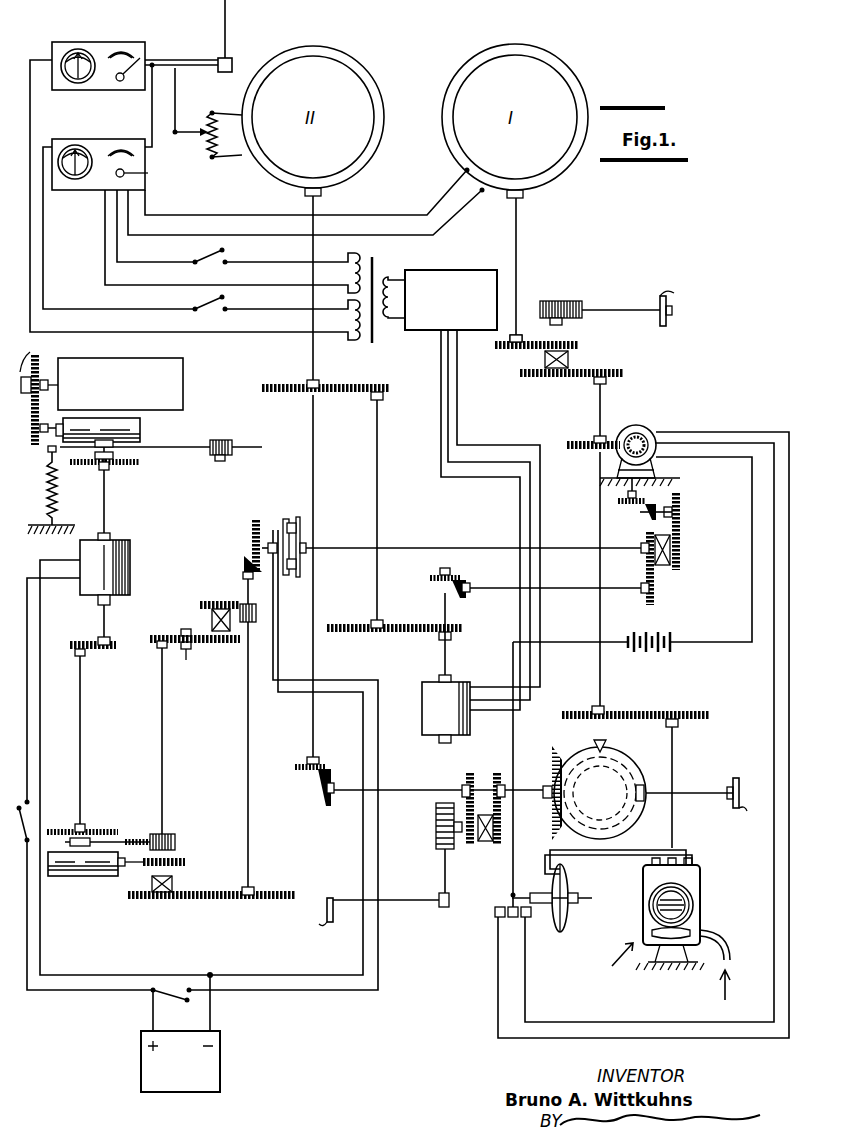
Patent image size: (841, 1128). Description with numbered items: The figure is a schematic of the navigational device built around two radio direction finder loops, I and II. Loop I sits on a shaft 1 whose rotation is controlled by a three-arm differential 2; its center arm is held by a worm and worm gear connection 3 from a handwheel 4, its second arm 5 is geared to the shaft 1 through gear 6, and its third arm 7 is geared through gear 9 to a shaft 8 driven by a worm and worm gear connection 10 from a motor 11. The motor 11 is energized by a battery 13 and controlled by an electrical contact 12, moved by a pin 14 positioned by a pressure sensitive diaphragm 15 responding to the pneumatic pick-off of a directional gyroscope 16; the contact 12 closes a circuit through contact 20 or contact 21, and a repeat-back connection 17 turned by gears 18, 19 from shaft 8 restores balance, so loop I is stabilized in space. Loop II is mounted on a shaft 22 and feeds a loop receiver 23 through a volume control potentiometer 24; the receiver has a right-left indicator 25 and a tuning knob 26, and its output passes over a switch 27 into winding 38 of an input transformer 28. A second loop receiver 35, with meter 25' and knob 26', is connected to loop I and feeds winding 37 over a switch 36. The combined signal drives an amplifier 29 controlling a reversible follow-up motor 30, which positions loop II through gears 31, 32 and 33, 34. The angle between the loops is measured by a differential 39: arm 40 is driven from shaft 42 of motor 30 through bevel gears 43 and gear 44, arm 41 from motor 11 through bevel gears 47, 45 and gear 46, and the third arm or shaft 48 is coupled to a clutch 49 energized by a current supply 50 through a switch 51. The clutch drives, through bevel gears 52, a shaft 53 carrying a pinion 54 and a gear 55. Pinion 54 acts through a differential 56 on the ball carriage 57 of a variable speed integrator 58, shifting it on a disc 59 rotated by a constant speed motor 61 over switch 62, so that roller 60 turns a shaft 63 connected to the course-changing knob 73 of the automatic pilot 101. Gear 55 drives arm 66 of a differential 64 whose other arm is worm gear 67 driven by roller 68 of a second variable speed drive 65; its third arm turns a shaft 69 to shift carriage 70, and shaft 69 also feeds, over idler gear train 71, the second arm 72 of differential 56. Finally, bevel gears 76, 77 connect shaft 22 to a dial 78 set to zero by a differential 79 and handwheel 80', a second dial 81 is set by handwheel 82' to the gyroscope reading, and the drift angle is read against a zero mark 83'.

The shaft 1 is at (518, 238).
The three-arm differential 2 is at (545, 359).
The worm and worm gear connection 3 is at (558, 302).
The handwheel 4 is at (675, 308).
The second arm 5 is at (580, 343).
The gear 6 is at (494, 349).
The third arm 7 is at (545, 378).
The shaft 8 is at (598, 413).
The gear 9 is at (619, 378).
The worm and worm gear connection 10 is at (575, 452).
The motor 11 is at (651, 432).
The electrical contact 12 is at (512, 918).
The battery 13 is at (649, 654).
The pin 14 is at (524, 892).
The pressure sensitive diaphragm 15 is at (562, 931).
The directional gyroscope 16 is at (701, 906).
The repeat-back connection 17 is at (673, 769).
The gear 18 is at (690, 712).
The gear 19 is at (580, 711).
The contact 20 is at (486, 917).
The contact 21 is at (528, 918).
The shaft 22 is at (313, 247).
The loop receiver 23 is at (107, 45).
The volume control potentiometer 24 is at (213, 119).
The zero signal or right-left indicator 25 is at (78, 48).
The meter 25' is at (75, 184).
The tuning knob 26 is at (188, 36).
The knob 26' is at (146, 176).
The switch 27 is at (210, 313).
The input transformer 28 is at (386, 301).
The amplifier 29 is at (451, 300).
The reversible follow-up motor 30 is at (446, 709).
The gear 31 is at (463, 627).
The gear 32 is at (395, 612).
The gear 33 is at (390, 388).
The gear 34 is at (326, 374).
The second loop receiver 35 is at (96, 140).
The switch 36 is at (210, 266).
The winding 37 is at (341, 273).
The winding 38 is at (341, 320).
The differential 39 is at (663, 568).
The arm 40 is at (645, 558).
The arm 41 is at (682, 550).
The shaft 42 is at (445, 653).
The bevel gears 43 is at (455, 581).
The gear 44 is at (652, 606).
The bevel gear 45 is at (638, 508).
The gear 46 is at (682, 497).
The bevel gear 47 is at (662, 472).
The third arm 48 is at (418, 545).
The clutch 49 is at (292, 516).
The battery or current supply 50 is at (180, 1061).
The switch 51 is at (171, 1010).
The bevel gears 52 is at (252, 528).
The shaft 53 is at (250, 738).
The pinion 54 is at (250, 620).
The gear 55 is at (268, 902).
The differential 56 is at (205, 607).
The ball carriage 57 is at (114, 458).
The variable speed integrator 58 is at (128, 510).
The rotating disc 59 is at (105, 478).
The roller 60 is at (142, 428).
The constant speed motor 61 is at (132, 548).
The switch 62 is at (35, 815).
The shaft 63 is at (47, 490).
The differential 64 is at (152, 878).
The variable speed drive 65 is at (61, 908).
The arm 66 is at (152, 905).
The worm gear 67 is at (188, 857).
The roller 68 is at (95, 876).
The shaft 69 is at (163, 768).
The carriage 70 is at (92, 828).
The idler gear train 71 is at (178, 635).
The second arm 72 is at (196, 653).
The knob 73 is at (41, 388).
The bevel gear 76 is at (323, 775).
The bevel gear 77 is at (553, 756).
The dial 78 is at (630, 815).
The differential 79 is at (439, 833).
The handwheel 80' is at (383, 898).
The second dial 81 is at (640, 782).
The handwheel 82' is at (702, 780).
The zero mark 83' is at (619, 738).
The automatic pilot 101 is at (172, 400).